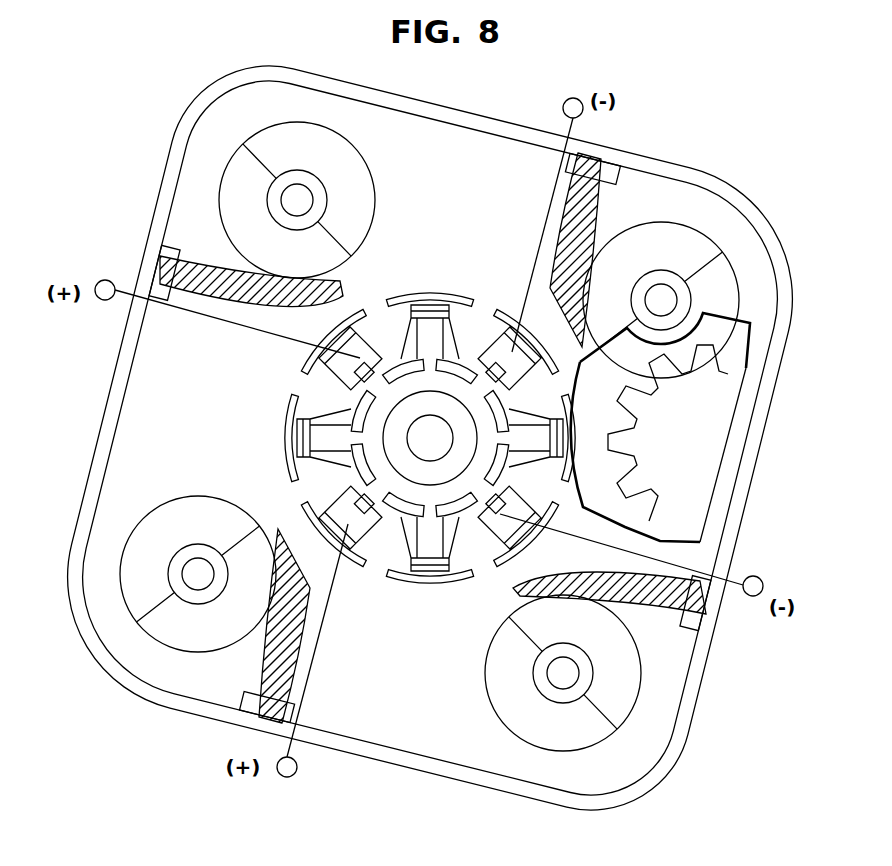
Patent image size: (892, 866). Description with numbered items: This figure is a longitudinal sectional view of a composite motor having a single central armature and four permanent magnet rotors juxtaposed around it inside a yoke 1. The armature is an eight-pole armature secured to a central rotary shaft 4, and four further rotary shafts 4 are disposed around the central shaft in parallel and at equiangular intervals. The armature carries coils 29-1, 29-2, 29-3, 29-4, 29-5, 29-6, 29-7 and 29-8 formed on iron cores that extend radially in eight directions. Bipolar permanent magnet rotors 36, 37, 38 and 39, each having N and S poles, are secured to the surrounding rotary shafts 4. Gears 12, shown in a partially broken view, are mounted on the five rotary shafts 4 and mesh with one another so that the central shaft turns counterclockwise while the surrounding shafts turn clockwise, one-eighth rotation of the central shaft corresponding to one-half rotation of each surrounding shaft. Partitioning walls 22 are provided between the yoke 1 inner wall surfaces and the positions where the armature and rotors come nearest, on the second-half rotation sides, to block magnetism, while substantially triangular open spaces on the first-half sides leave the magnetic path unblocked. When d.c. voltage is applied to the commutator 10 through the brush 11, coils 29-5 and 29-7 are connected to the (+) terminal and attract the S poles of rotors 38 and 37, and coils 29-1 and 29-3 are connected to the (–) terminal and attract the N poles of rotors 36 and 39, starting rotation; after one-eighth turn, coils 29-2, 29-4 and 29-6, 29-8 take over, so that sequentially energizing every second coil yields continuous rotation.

The yoke 1 is at (114, 379).
The rotary shaft 4 is at (197, 585).
The commutator 10 is at (352, 403).
The brush 11 is at (373, 573).
The gear 12 is at (624, 422).
The partitioning wall 22 is at (586, 220).
The coil 29-1 is at (575, 438).
The coil 29-2 is at (520, 525).
The coil 29-3 is at (430, 583).
The coil 29-4 is at (344, 547).
The coil 29-5 is at (285, 438).
The coil 29-6 is at (325, 352).
The coil 29-7 is at (430, 293).
The coil 29-8 is at (507, 368).
The bipolar permanent magnet rotor 36 is at (740, 289).
The bipolar permanent magnet rotor 37 is at (219, 178).
The bipolar permanent magnet rotor 38 is at (143, 527).
The bipolar permanent magnet rotor 39 is at (640, 703).